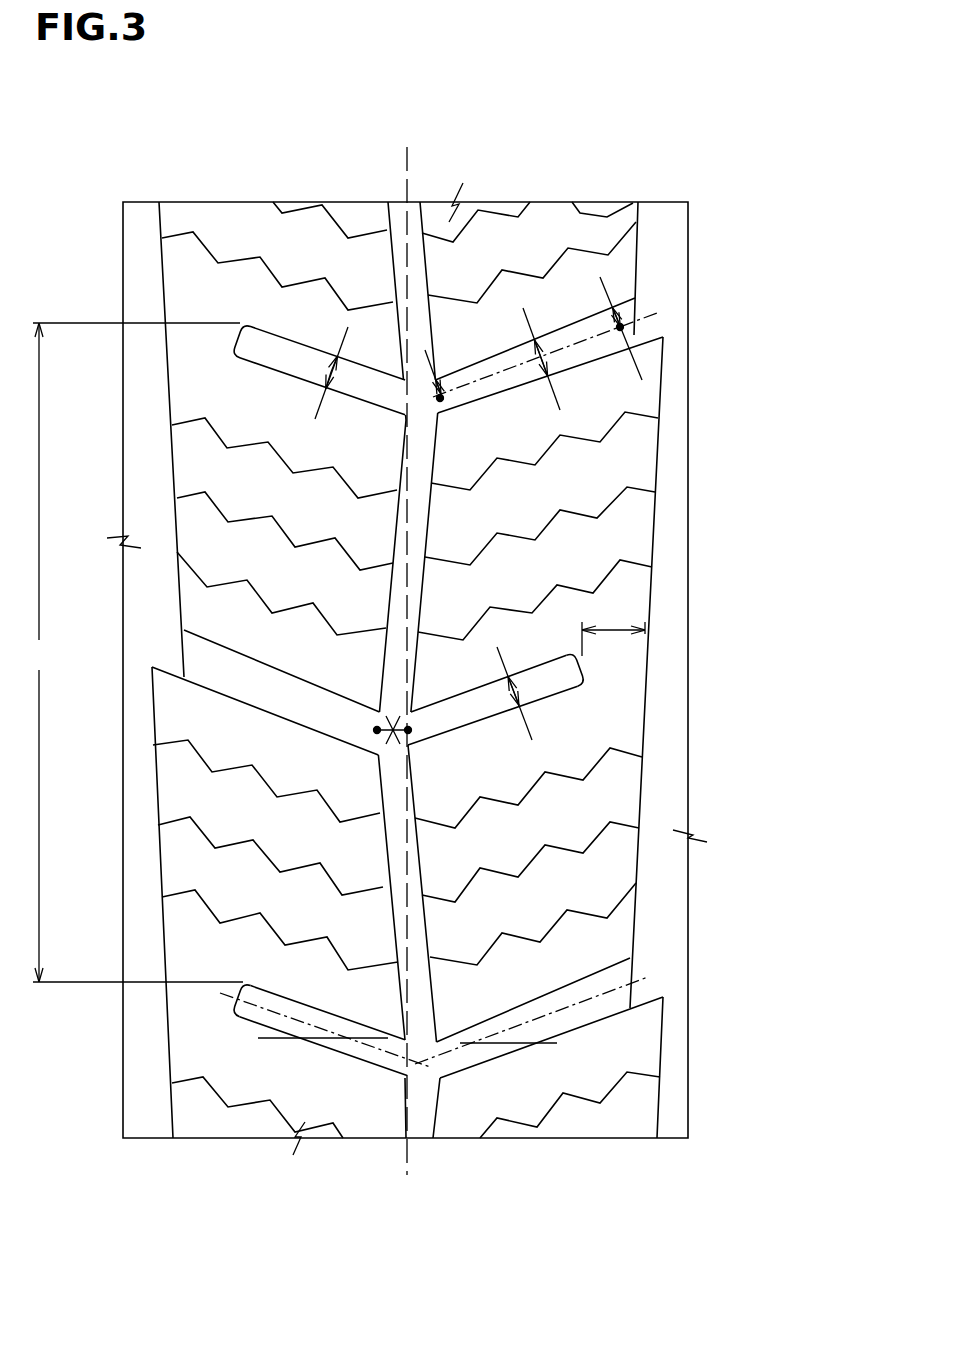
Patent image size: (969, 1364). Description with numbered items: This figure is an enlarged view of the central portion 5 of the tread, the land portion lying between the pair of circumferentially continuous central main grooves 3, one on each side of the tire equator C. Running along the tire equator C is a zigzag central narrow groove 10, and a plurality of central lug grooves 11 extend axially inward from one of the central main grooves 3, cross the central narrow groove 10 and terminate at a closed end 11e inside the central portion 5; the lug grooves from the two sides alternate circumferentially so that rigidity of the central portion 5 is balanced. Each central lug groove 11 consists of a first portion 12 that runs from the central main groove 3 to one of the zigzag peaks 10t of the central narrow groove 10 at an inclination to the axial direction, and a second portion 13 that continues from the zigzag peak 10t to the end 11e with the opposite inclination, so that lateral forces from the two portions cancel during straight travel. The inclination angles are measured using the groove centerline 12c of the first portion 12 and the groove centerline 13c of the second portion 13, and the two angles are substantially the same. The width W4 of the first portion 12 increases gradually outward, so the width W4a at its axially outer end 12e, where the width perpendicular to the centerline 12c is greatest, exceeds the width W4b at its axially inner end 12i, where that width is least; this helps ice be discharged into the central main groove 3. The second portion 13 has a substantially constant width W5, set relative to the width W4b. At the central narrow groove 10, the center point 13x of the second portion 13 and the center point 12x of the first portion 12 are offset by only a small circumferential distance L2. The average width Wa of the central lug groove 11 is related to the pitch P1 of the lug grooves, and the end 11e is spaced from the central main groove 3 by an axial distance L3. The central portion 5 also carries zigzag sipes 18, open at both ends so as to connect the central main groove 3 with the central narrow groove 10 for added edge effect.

The central main groove 3 is at (136, 240).
The central portion 5 is at (545, 240).
The central narrow groove 10 is at (393, 200).
The zigzag peak 10t is at (447, 421).
The central lug groove 11 is at (272, 354).
The end of central lug groove 11e is at (588, 690).
The first portion 12 is at (255, 685).
The groove centerline of first portion 12c is at (622, 988).
The axially outer end of first portion 12e is at (622, 325).
The axially inner end of first portion 12i is at (442, 400).
The center point of first portion 12x is at (375, 730).
The second portion 13 is at (433, 710).
The groove centerline of second portion 13c is at (365, 1043).
The center point of second portion 13x is at (406, 728).
The sipe 18 is at (542, 516).
The tire equator C is at (407, 646).
The pitch of central lug grooves P1 is at (132, 652).
The circumferential distance L2 is at (382, 757).
The axial distance L3 is at (613, 629).
The width of first portion W4 is at (545, 358).
The width at axially outer end W4a is at (606, 318).
The width at axially inner end W4b is at (443, 382).
The width of second portion W5 is at (333, 373).
The width of central lug groove Wa is at (520, 693).